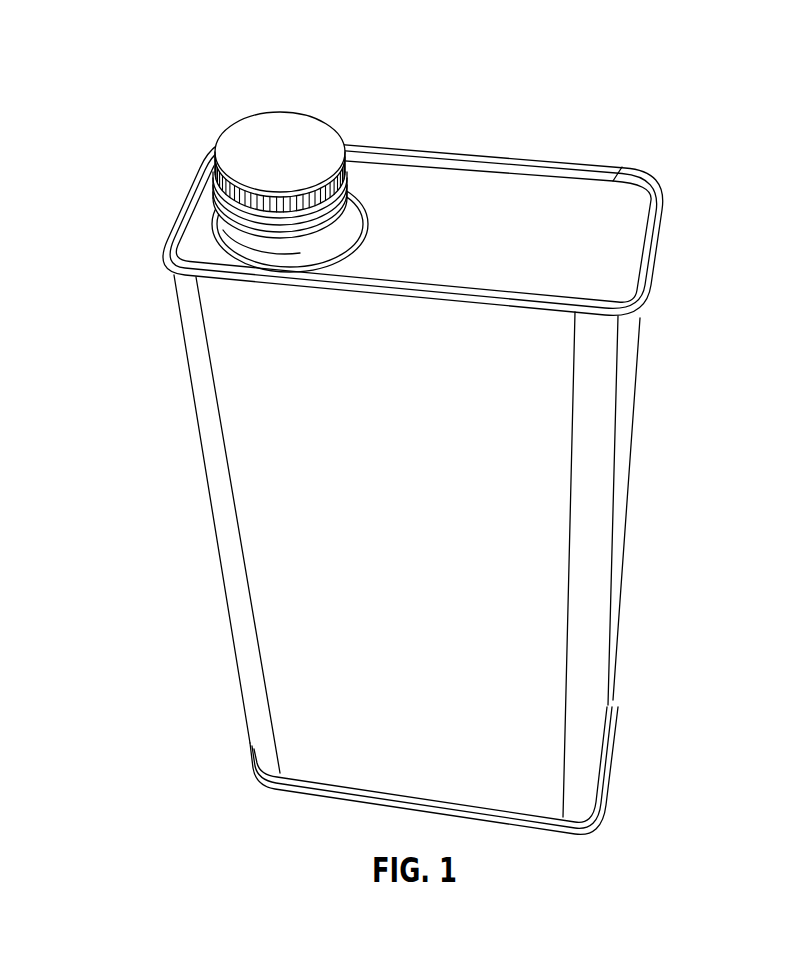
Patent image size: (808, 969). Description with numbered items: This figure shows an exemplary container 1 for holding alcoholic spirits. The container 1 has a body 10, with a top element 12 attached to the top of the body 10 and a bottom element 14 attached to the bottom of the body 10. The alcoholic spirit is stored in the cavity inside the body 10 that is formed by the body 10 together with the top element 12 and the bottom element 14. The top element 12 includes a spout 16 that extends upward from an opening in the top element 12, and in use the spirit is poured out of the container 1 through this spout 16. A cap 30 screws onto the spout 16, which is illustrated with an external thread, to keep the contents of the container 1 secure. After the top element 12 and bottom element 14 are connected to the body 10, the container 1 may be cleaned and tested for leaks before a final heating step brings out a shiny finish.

The container 1 is at (273, 334).
The body 10 is at (515, 465).
The top element 12 is at (565, 240).
The bottom element 14 is at (607, 807).
The spout 16 is at (272, 252).
The cap 30 is at (272, 147).